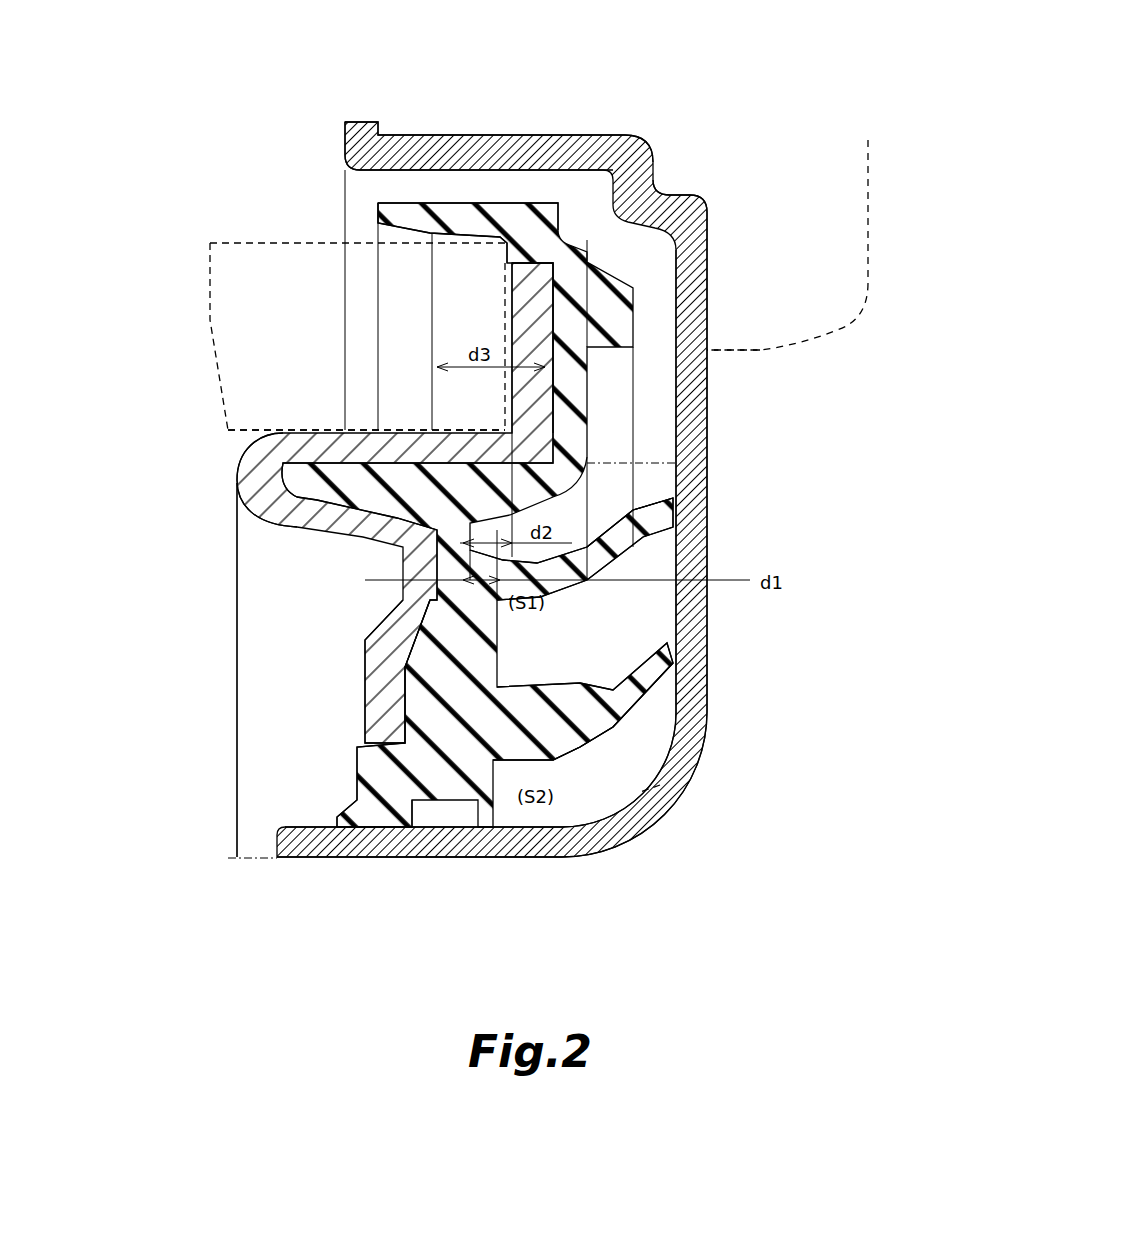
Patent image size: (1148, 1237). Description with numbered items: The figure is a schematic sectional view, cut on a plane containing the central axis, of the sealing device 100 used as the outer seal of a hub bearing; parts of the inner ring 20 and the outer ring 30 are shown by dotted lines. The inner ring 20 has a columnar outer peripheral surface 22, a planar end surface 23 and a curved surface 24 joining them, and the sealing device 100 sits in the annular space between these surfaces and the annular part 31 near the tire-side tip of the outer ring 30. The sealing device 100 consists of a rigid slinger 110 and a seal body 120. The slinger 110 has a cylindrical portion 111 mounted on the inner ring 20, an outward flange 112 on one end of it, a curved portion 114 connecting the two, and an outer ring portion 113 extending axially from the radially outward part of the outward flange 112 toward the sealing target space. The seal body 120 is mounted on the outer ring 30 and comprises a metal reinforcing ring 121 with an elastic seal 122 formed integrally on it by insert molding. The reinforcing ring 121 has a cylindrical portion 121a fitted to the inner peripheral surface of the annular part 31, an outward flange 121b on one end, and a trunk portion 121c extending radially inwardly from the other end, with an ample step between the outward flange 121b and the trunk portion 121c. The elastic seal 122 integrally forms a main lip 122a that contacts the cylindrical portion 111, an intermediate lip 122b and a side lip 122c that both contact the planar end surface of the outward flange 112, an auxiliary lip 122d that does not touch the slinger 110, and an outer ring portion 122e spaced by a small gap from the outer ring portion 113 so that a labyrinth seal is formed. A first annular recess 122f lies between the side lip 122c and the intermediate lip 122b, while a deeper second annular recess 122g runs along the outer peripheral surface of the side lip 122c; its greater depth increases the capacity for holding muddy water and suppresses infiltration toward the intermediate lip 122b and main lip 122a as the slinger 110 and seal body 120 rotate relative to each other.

The sealing device 100 is at (693, 72).
The slinger 110 is at (687, 147).
The cylindrical portion 111 is at (467, 858).
The outward flange 112 is at (708, 387).
The outer ring portion 113 is at (493, 135).
The curved portion 114 is at (630, 835).
The seal body 120 is at (205, 546).
The reinforcing ring 121 is at (327, 557).
The cylindrical portion of reinforcing ring 121a is at (340, 447).
The outward flange of reinforcing ring 121b is at (540, 307).
The trunk portion 121c is at (380, 680).
The elastic seal 122 is at (615, 330).
The main lip 122a is at (373, 807).
The intermediate lip 122b is at (597, 717).
The side lip 122c is at (660, 547).
The auxiliary lip 122d is at (707, 200).
The outer ring portion of elastic seal 122e is at (455, 232).
The first annular recess 122f is at (625, 705).
The second annular recess 122g is at (625, 520).
The inner ring 20 is at (825, 245).
The outer peripheral surface 22 is at (313, 820).
The end surface 23 is at (708, 417).
The curved surface 24 is at (660, 785).
The outer ring 30 is at (188, 360).
The annular part 31 is at (403, 320).